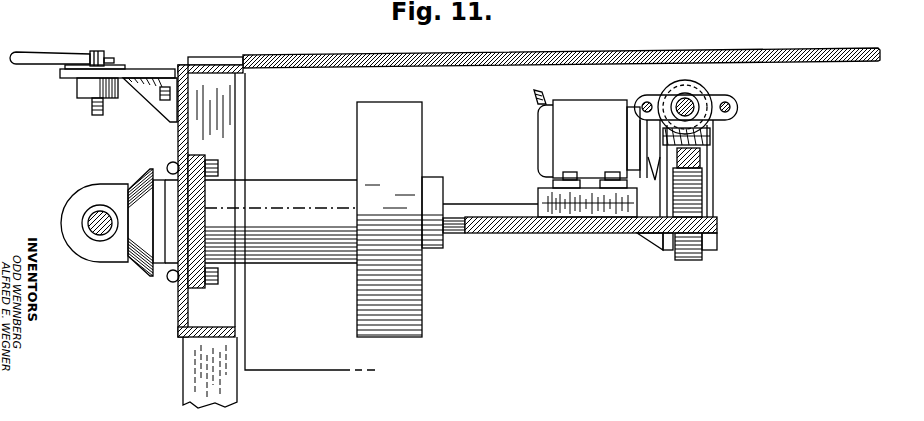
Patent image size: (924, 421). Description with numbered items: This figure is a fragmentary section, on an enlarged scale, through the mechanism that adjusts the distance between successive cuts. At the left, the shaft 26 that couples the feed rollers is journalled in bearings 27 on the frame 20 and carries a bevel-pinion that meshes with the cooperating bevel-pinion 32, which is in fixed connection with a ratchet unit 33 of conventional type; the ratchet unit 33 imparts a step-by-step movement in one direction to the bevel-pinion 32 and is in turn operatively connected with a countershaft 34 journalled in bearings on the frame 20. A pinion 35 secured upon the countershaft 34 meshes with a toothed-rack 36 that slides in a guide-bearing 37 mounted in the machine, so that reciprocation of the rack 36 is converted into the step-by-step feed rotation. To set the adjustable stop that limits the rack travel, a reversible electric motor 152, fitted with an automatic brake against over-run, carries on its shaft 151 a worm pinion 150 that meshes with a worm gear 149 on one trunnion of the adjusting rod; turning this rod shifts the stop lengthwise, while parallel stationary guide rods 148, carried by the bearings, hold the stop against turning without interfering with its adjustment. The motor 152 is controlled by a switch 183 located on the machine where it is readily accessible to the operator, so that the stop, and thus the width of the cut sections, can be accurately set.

The switch 183 is at (53, 55).
The bearings 27 is at (80, 192).
The shaft 26 is at (110, 232).
The bevel-pinion 32 is at (137, 180).
The ratchet unit 33 is at (332, 165).
The countershaft 34 is at (480, 208).
The frame 20 is at (185, 370).
The reversible electric motor 152 is at (600, 91).
The stationary guide rods 148 is at (733, 107).
The worm gear 149 is at (700, 83).
The worm pinion 150 is at (713, 132).
The guide-bearing 37 is at (710, 152).
The toothed-rack 36 is at (700, 165).
The shaft 151 is at (663, 170).
The pinion 35 is at (683, 262).